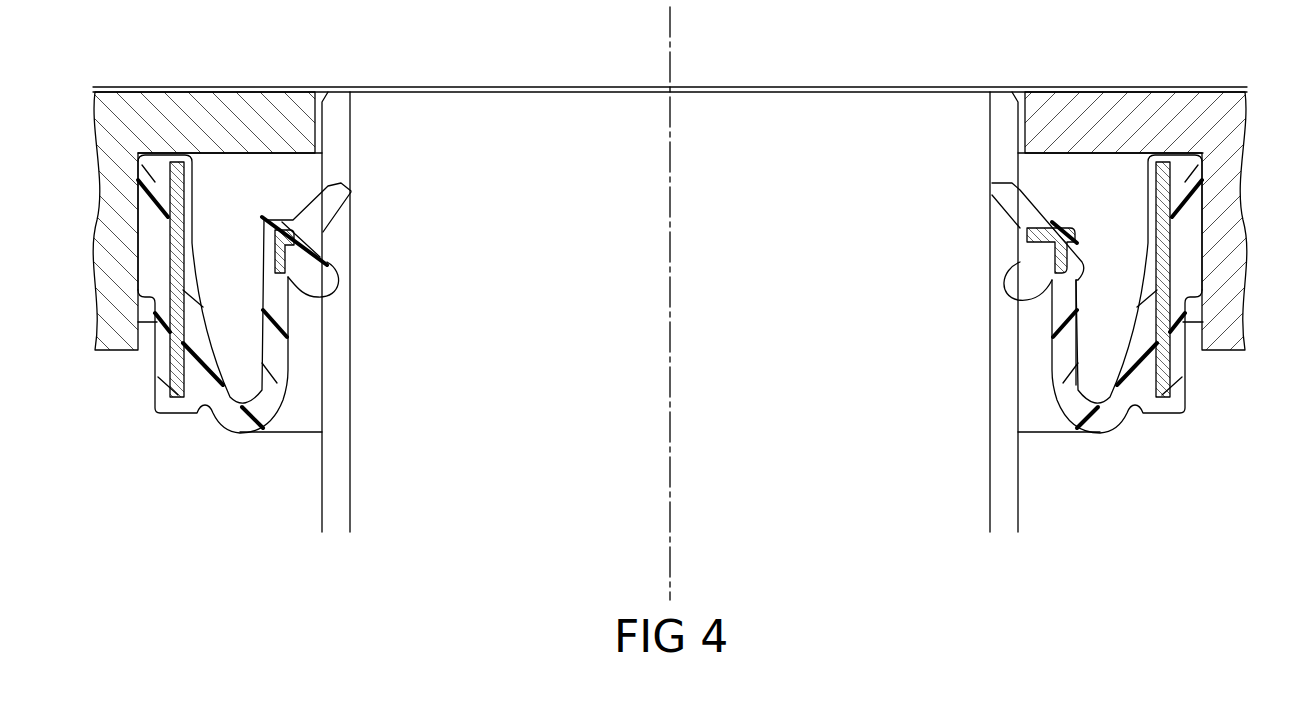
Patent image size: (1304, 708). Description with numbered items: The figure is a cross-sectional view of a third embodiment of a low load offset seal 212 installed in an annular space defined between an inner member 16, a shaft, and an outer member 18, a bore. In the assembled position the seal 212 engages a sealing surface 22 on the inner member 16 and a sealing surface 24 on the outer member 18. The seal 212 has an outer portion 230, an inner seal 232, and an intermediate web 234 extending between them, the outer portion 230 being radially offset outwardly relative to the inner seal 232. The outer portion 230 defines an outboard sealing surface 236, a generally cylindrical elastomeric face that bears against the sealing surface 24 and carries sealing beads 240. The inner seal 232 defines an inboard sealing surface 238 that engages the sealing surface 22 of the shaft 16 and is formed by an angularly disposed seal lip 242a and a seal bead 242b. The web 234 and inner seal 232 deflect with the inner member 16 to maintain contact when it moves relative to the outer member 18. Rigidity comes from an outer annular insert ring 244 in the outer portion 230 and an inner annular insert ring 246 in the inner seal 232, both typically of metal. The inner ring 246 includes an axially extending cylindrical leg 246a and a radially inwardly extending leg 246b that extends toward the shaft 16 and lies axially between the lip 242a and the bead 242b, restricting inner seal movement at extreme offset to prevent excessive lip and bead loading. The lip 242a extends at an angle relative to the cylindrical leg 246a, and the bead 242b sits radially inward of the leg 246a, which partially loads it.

The inner member 16 is at (937, 98).
The outer member 18 is at (1085, 98).
The sealing surface 22 is at (1020, 160).
The sealing surface 24 is at (146, 350).
The seal 212 is at (1078, 465).
The outer portion 230 is at (165, 406).
The inner seal 232 is at (1003, 310).
The intermediate web 234 is at (243, 426).
The outboard sealing surface 236 is at (116, 229).
The inboard sealing surface 238 is at (265, 217).
The sealing beads 240 is at (137, 207).
The angularly disposed seal lip 242a is at (350, 185).
The seal bead 242b is at (323, 290).
The outer annular insert ring 244 is at (180, 247).
The inner annular insert ring 246 is at (1000, 246).
The axially extending cylindrical leg 246a is at (277, 257).
The radially inwardly extending leg 246b is at (1040, 228).